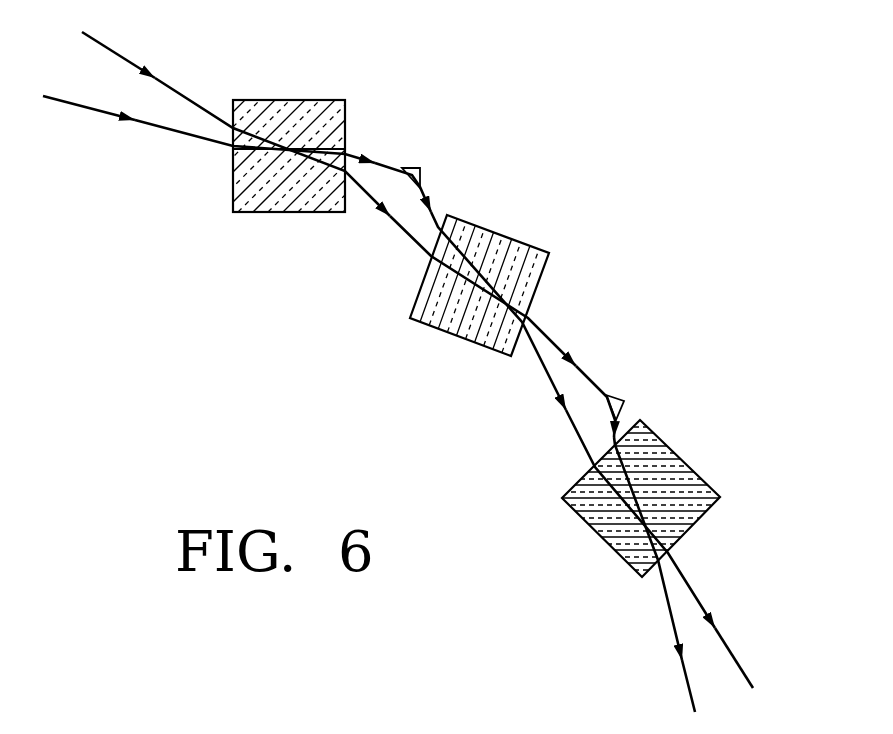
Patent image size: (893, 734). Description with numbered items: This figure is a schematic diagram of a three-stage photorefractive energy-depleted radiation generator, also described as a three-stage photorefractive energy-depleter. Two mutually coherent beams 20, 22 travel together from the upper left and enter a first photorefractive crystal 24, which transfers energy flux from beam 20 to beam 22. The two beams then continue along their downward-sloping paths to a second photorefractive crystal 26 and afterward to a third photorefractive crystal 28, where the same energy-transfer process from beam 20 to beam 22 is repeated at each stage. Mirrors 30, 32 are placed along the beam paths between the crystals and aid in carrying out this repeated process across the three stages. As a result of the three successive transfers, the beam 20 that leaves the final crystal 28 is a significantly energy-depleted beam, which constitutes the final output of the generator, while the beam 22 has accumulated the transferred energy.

The beam 20 is at (112, 47).
The beam 22 is at (68, 105).
The first photorefractive crystal 24 is at (287, 100).
The photorefractive crystal 26 is at (458, 338).
The photorefractive crystal 28 is at (700, 473).
The mirror 30 is at (423, 181).
The mirror 32 is at (610, 397).